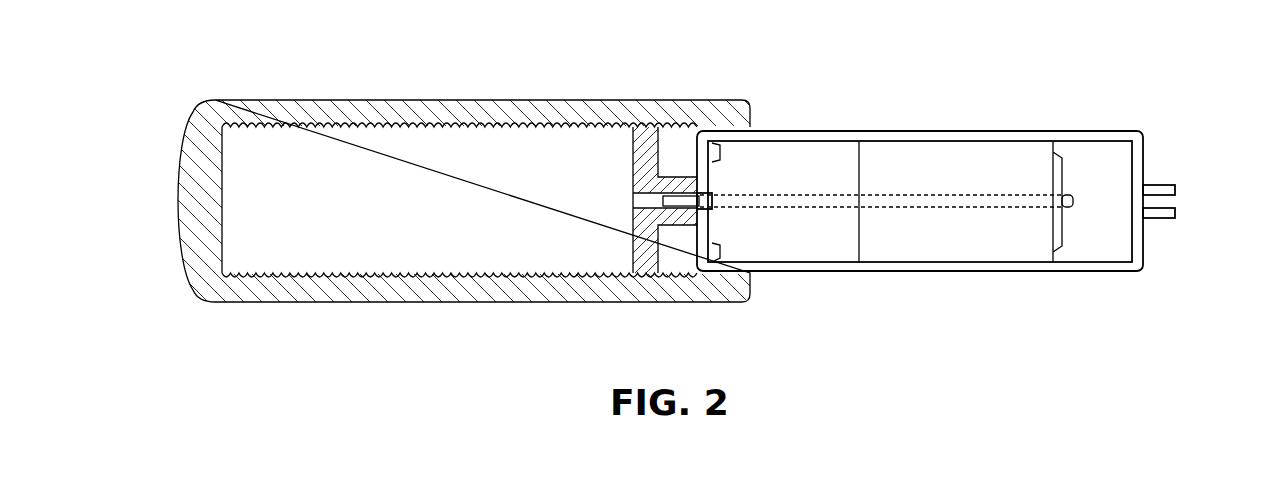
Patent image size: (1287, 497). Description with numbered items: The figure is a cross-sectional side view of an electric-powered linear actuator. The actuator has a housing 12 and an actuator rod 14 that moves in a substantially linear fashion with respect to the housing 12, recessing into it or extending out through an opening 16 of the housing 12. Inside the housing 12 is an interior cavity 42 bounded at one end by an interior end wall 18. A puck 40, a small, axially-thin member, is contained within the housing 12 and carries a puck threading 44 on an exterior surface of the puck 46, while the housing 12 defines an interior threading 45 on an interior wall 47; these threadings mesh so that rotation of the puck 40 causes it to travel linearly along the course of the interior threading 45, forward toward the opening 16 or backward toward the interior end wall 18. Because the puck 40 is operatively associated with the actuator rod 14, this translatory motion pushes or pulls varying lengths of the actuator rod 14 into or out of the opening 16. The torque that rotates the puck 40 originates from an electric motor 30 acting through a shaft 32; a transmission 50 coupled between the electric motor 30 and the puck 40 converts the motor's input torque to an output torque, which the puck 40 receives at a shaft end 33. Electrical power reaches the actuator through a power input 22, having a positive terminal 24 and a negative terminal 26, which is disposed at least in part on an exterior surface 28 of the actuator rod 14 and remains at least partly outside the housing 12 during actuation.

The housing 12 is at (394, 93).
The actuator rod 14 is at (864, 123).
The opening 16 is at (769, 129).
The interior end wall 18 is at (220, 250).
The power input 22 is at (1162, 253).
The positive terminal 24 is at (1177, 218).
The negative terminal 26 is at (1148, 195).
The exterior surface 28 is at (1143, 168).
The electric motor 30 is at (948, 245).
The shaft 32 is at (808, 208).
The shaft end 33 is at (688, 202).
The puck 40 is at (622, 252).
The interior cavity 42 is at (277, 138).
The puck threading 44 is at (485, 96).
The interior threading 45 is at (459, 203).
The exterior surface of the puck 46 is at (650, 130).
The interior wall 47 is at (612, 130).
The transmission 50 is at (770, 245).